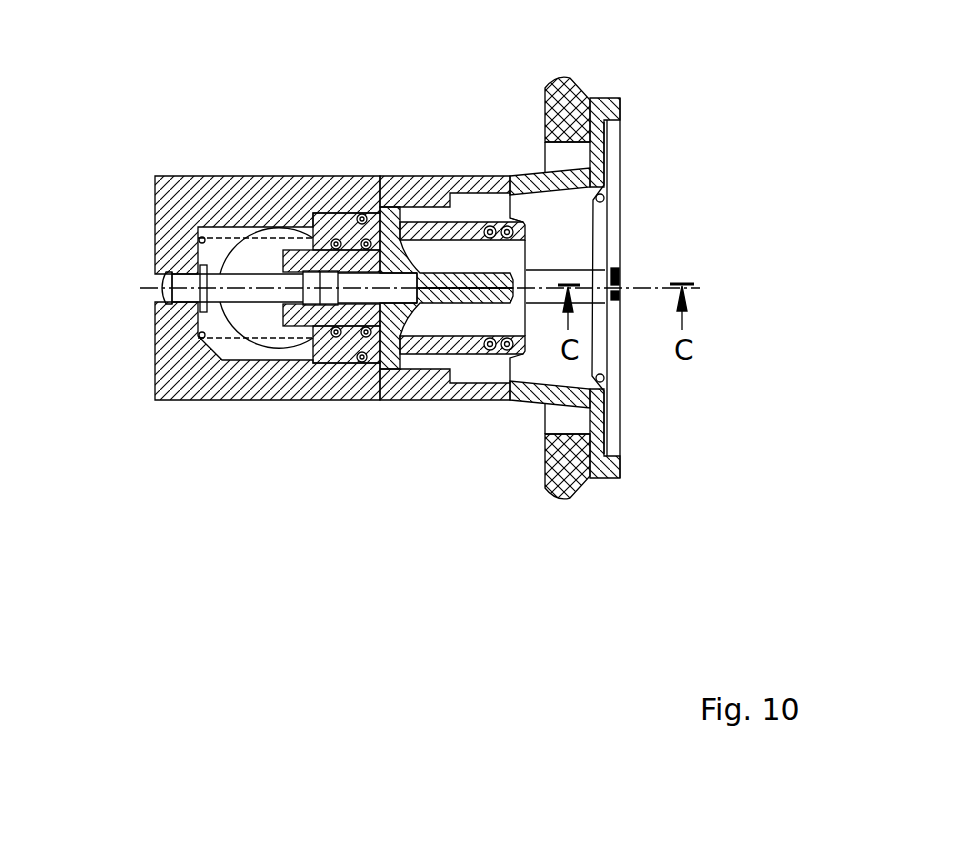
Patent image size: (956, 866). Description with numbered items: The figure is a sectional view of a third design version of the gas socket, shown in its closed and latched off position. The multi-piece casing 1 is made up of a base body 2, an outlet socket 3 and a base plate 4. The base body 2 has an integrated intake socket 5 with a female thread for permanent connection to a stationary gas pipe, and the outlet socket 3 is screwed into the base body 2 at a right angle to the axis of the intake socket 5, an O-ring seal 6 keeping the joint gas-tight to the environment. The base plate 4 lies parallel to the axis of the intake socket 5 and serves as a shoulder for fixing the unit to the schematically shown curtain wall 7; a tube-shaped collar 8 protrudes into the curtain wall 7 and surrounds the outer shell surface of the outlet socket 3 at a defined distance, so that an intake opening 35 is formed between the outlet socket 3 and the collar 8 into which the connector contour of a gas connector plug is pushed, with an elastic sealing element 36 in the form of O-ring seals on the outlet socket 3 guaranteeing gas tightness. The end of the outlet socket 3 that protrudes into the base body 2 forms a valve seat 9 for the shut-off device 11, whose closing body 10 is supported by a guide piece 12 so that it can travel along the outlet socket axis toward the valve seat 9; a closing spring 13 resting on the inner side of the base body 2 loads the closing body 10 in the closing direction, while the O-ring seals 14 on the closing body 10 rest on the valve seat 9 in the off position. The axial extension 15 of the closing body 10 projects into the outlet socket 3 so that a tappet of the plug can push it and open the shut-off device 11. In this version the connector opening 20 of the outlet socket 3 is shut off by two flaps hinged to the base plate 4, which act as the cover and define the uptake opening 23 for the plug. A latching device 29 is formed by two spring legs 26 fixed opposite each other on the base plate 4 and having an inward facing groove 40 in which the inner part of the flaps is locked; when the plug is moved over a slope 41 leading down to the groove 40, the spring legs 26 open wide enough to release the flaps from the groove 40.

The casing 1 is at (348, 160).
The base body 2 is at (178, 207).
The outlet socket 3 is at (522, 177).
The base plate 4 is at (598, 455).
The intake socket 5 is at (242, 258).
The O-ring seal 6 is at (380, 178).
The curtain wall 7 is at (573, 463).
The collar 8 is at (432, 182).
The valve seat 9 is at (352, 352).
The closing body 10 is at (275, 345).
The shut-off device 11 is at (308, 353).
The guide piece 12 is at (223, 280).
The closing spring 13 is at (322, 215).
The O-ring seals 14 is at (365, 340).
The axial extension 15 is at (465, 288).
The connector opening 20 is at (491, 318).
The uptake opening 23 is at (615, 356).
The spring legs 26 is at (545, 293).
The latching device 29 is at (636, 259).
The intake opening 35 is at (457, 213).
The elastic sealing element 36 is at (523, 222).
The groove 40 is at (618, 292).
The slope 41 is at (617, 277).